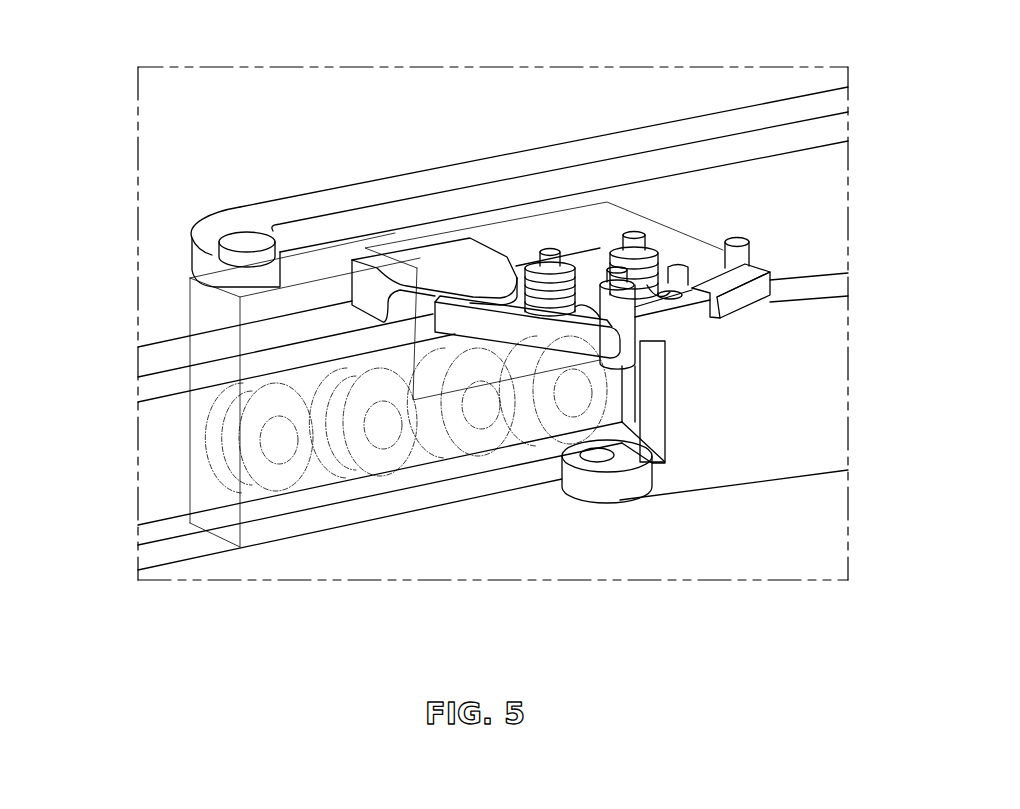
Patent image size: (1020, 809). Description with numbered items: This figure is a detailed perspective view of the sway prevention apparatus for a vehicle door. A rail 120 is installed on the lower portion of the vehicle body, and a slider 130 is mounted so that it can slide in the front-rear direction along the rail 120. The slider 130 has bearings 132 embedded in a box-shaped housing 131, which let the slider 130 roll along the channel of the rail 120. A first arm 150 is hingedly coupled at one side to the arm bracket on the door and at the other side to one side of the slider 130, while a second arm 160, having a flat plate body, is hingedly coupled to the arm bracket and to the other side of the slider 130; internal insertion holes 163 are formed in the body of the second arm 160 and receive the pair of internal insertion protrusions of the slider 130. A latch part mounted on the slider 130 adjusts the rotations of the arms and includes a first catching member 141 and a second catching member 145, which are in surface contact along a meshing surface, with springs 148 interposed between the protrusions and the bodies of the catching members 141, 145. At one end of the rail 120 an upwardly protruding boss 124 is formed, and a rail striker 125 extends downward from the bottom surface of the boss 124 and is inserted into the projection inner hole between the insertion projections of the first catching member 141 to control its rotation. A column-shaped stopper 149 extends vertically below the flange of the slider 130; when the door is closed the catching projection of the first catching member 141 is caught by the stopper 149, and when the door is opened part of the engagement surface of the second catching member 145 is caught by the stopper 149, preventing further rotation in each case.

The rail 120 is at (164, 469).
The boss 124 is at (683, 230).
The rail striker 125 is at (485, 340).
The slider 130 is at (365, 519).
The housing 131 is at (302, 522).
The bearings 132 is at (455, 423).
The first catching member 141 is at (570, 345).
The second catching member 145 is at (773, 290).
The springs 148 is at (563, 250).
The stopper 149 is at (650, 400).
The first arm 150 is at (390, 190).
The second arm 160 is at (784, 462).
The internal insertion holes 163 is at (752, 251).